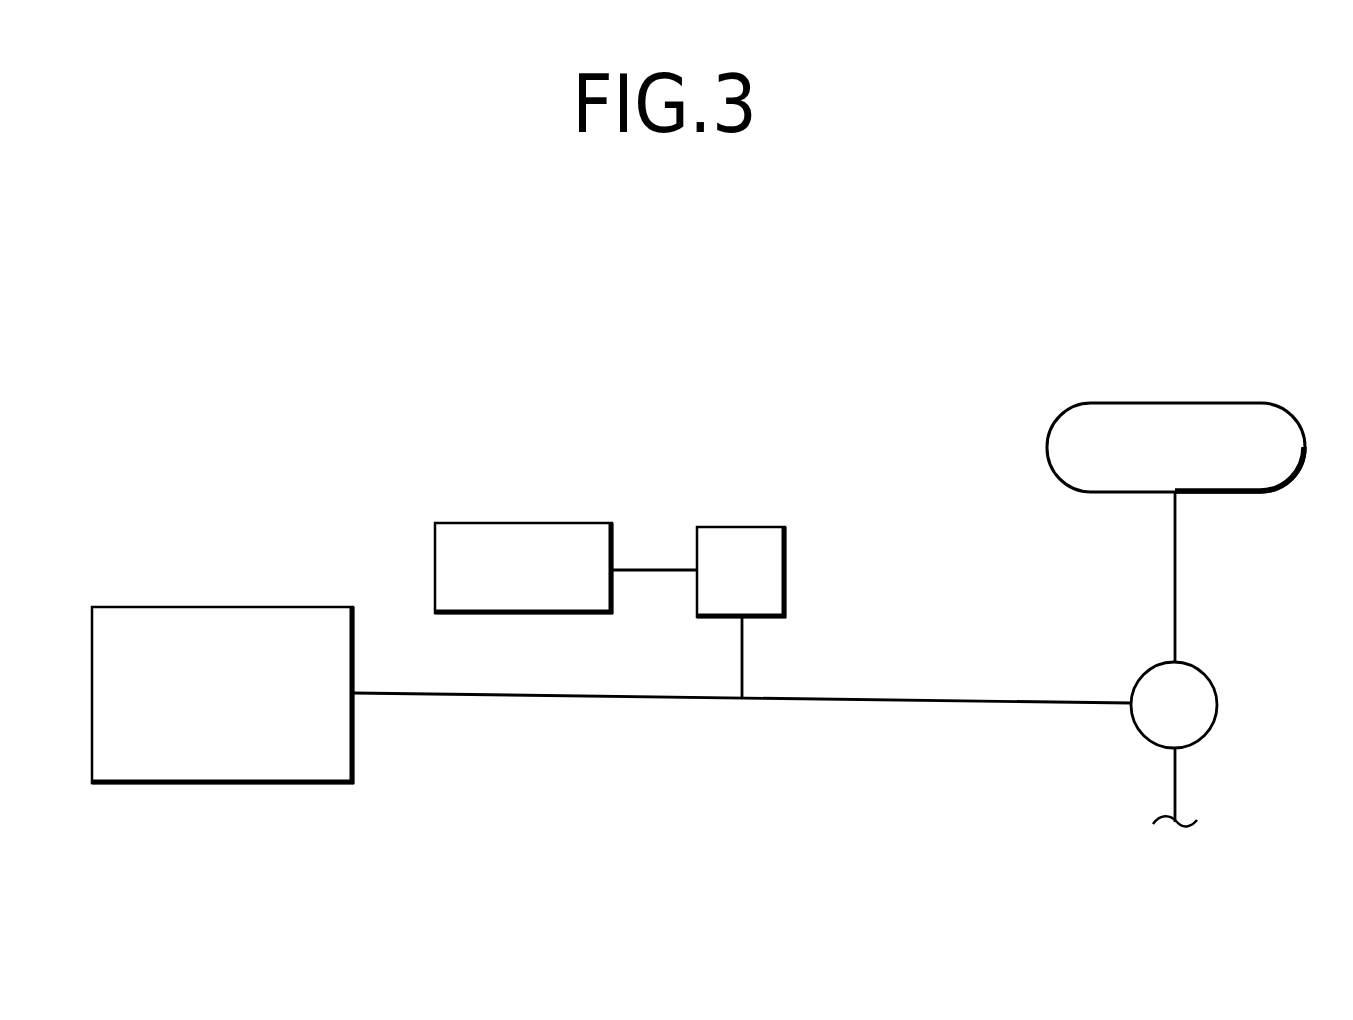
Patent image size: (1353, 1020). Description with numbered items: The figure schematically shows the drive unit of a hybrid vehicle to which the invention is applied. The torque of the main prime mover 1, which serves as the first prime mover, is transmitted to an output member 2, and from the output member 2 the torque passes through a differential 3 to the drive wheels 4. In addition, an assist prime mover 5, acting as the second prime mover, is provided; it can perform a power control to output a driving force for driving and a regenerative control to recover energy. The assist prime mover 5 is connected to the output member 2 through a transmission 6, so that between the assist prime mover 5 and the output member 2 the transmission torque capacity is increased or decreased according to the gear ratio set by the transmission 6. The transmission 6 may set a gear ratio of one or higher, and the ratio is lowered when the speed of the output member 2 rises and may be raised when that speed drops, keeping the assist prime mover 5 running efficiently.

The main prime mover 1 is at (232, 785).
The output member 2 is at (810, 700).
The differential 3 is at (1217, 718).
The drive wheels 4 is at (1267, 404).
The assist prime mover 5 is at (480, 523).
The transmission 6 is at (762, 527).